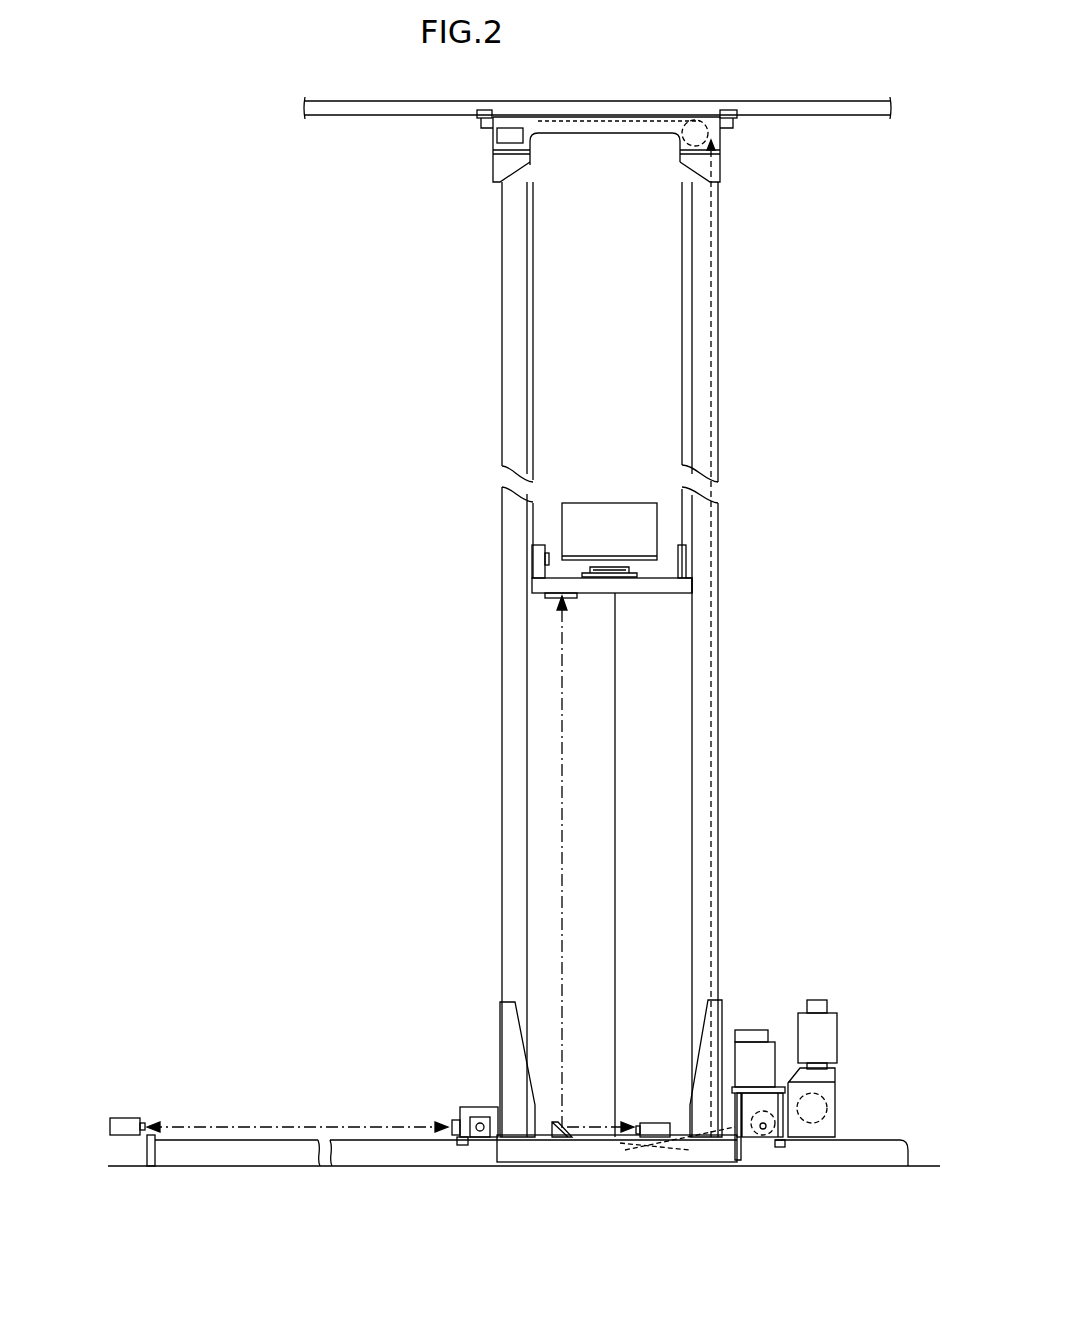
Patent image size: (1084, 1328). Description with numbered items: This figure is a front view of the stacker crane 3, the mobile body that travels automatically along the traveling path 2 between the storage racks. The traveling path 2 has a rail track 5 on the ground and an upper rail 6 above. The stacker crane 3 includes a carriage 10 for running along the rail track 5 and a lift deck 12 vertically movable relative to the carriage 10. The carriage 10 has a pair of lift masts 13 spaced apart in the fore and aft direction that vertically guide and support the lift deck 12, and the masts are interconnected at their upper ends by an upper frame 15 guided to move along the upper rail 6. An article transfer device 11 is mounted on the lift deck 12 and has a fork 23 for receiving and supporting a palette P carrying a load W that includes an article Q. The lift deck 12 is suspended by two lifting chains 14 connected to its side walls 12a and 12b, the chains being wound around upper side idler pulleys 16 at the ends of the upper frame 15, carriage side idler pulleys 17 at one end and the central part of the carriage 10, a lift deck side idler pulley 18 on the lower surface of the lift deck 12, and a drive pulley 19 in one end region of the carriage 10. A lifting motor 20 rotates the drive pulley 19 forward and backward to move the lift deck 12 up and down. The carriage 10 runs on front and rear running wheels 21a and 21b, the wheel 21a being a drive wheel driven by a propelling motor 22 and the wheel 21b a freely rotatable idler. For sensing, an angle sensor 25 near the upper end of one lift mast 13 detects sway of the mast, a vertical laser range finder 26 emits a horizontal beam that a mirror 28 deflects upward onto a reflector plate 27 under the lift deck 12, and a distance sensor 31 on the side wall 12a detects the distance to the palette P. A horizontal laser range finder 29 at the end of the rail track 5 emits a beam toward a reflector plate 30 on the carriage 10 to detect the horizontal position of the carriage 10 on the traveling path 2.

The traveling path 2 is at (290, 1060).
The stacker crane 3 is at (445, 468).
The rail track 5 is at (433, 1150).
The upper rail 6 is at (405, 117).
The carriage 10 is at (697, 1163).
The article transfer device 11 is at (628, 588).
The lift deck 12 is at (593, 596).
The side wall 12a is at (532, 552).
The side wall 12b is at (686, 553).
The lift mast 13 is at (512, 625).
The lifting chain 14 is at (536, 310).
The upper frame 15 is at (630, 132).
The upper side idler pulley 16 is at (537, 127).
The carriage side idler pulley 17 is at (692, 1052).
The lift deck side idler pulley 18 is at (612, 590).
The drive pulley 19 is at (822, 1105).
The lifting motor 20 is at (837, 1023).
The running wheel 21a is at (765, 1137).
The running wheel 21b is at (480, 1107).
The propelling motor 22 is at (755, 1043).
The fork 23 is at (688, 584).
The angle sensor 25 is at (495, 138).
The vertical laser range finder 26 is at (653, 1123).
The reflector plate 27 is at (546, 596).
The mirror 28 is at (563, 1124).
The horizontal laser range finder 29 is at (132, 1117).
The reflector plate 30 is at (458, 1115).
The distance sensor 31 is at (545, 550).
The load W is at (652, 518).
The palette P is at (637, 568).
The article Q is at (607, 488).